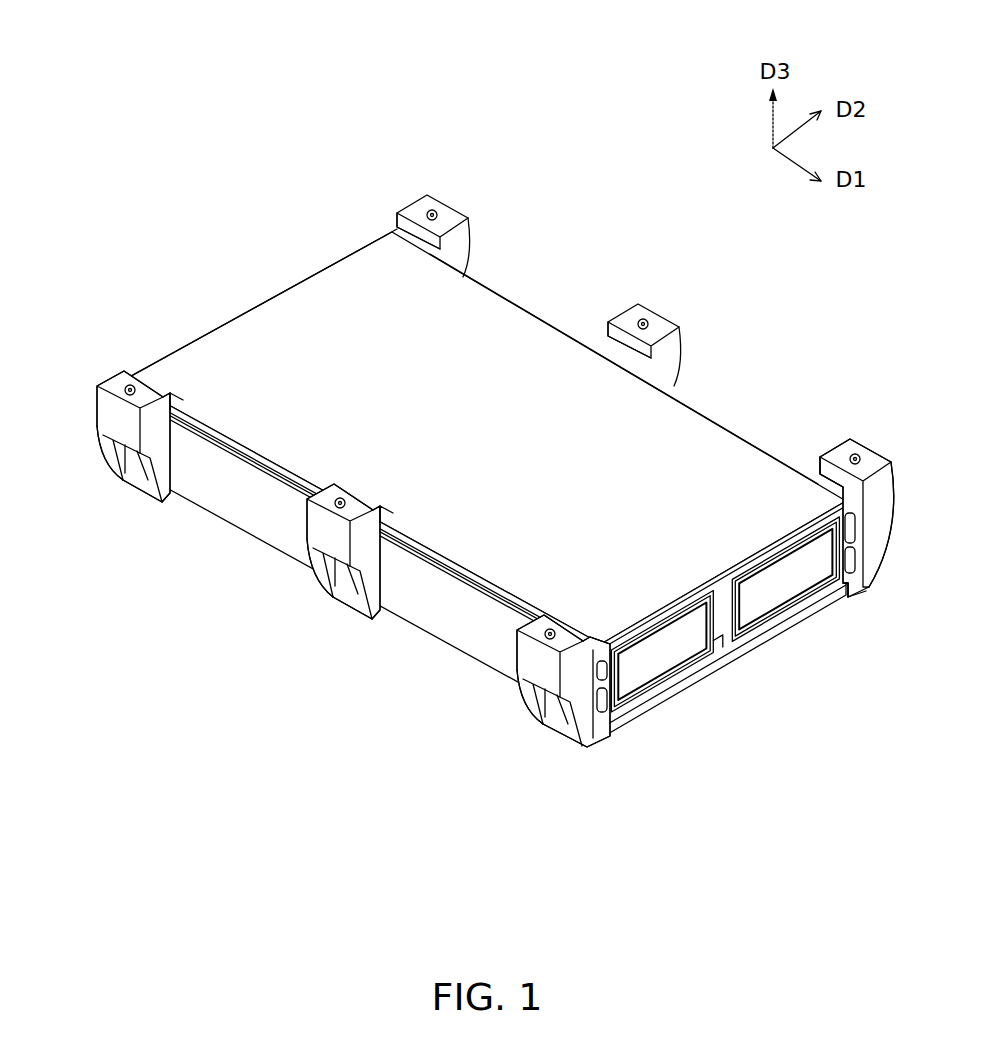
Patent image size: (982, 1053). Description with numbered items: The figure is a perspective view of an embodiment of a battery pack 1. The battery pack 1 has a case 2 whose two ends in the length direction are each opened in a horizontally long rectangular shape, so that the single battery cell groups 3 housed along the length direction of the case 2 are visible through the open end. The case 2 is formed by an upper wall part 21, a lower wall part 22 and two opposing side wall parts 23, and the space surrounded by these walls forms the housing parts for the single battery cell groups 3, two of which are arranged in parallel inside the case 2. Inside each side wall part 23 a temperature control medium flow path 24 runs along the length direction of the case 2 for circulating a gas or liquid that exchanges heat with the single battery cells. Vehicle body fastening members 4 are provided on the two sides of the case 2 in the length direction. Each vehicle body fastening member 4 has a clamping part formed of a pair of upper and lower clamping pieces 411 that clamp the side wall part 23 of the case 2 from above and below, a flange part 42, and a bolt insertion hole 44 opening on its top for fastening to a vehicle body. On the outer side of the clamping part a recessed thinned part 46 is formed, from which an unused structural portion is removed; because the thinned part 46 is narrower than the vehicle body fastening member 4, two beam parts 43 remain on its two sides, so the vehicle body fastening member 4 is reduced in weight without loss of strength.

The battery pack 1 is at (573, 98).
The case 2 is at (485, 491).
The single battery cell group 3 is at (680, 668).
The vehicle body fastening member 4 is at (462, 194).
The upper wall part 21 is at (292, 300).
The lower wall part 22 is at (668, 705).
The side wall part 23 is at (240, 515).
The temperature control medium flow path 24 is at (607, 702).
The flange part 42 is at (470, 236).
The beam part 43 is at (115, 470).
The bolt insertion hole 44 is at (432, 210).
The thinned part 46 is at (140, 488).
The clamping piece 411 is at (397, 226).